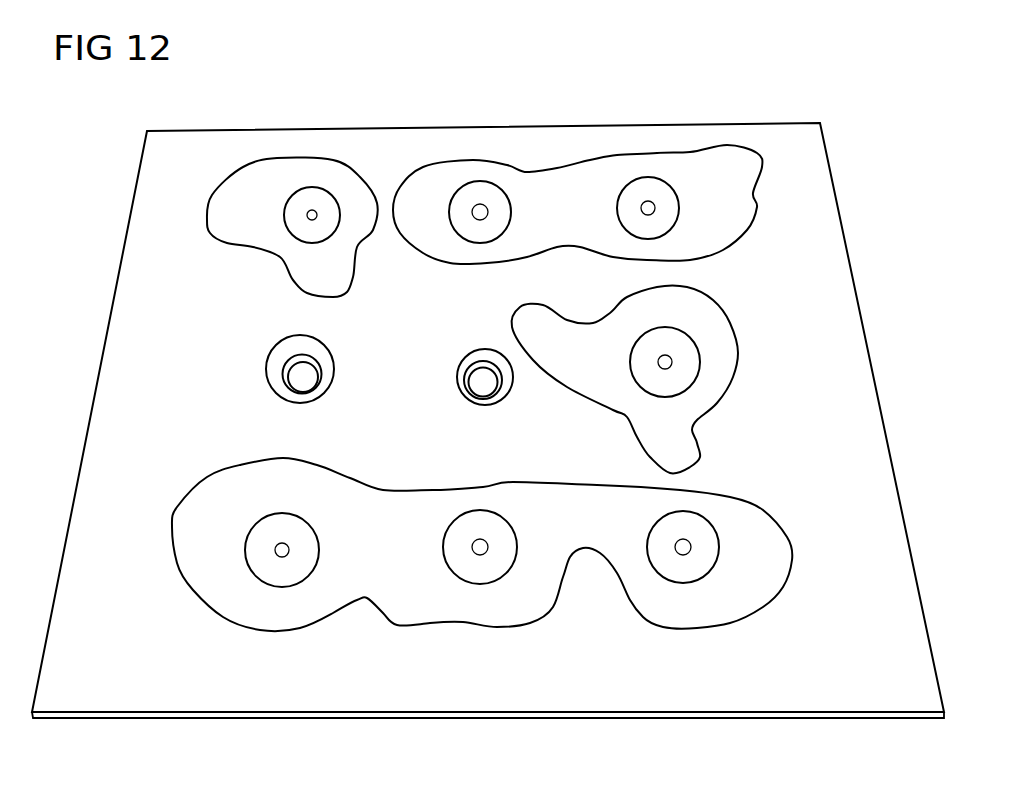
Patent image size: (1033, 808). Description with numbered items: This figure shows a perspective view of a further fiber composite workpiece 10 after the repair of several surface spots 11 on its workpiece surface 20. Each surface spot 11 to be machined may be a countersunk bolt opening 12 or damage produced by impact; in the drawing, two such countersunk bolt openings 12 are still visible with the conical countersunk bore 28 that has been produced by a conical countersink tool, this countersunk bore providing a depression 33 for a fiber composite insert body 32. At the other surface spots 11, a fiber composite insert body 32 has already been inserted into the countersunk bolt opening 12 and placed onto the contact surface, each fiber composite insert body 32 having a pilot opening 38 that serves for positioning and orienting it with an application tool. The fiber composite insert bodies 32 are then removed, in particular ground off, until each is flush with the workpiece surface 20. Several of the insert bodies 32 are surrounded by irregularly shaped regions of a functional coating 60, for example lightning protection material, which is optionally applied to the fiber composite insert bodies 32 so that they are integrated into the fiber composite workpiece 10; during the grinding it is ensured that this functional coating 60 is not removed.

The fiber composite workpiece 10 is at (130, 167).
The workpiece surface 20 is at (131, 296).
The surface spot 11 is at (285, 215).
The countersunk bolt opening 12 is at (306, 371).
The conical countersunk bore 28 is at (281, 359).
The depression 33 is at (268, 374).
The fiber composite insert body 32 is at (292, 208).
The pilot opening 38 is at (308, 216).
The functional coating 60 is at (427, 243).